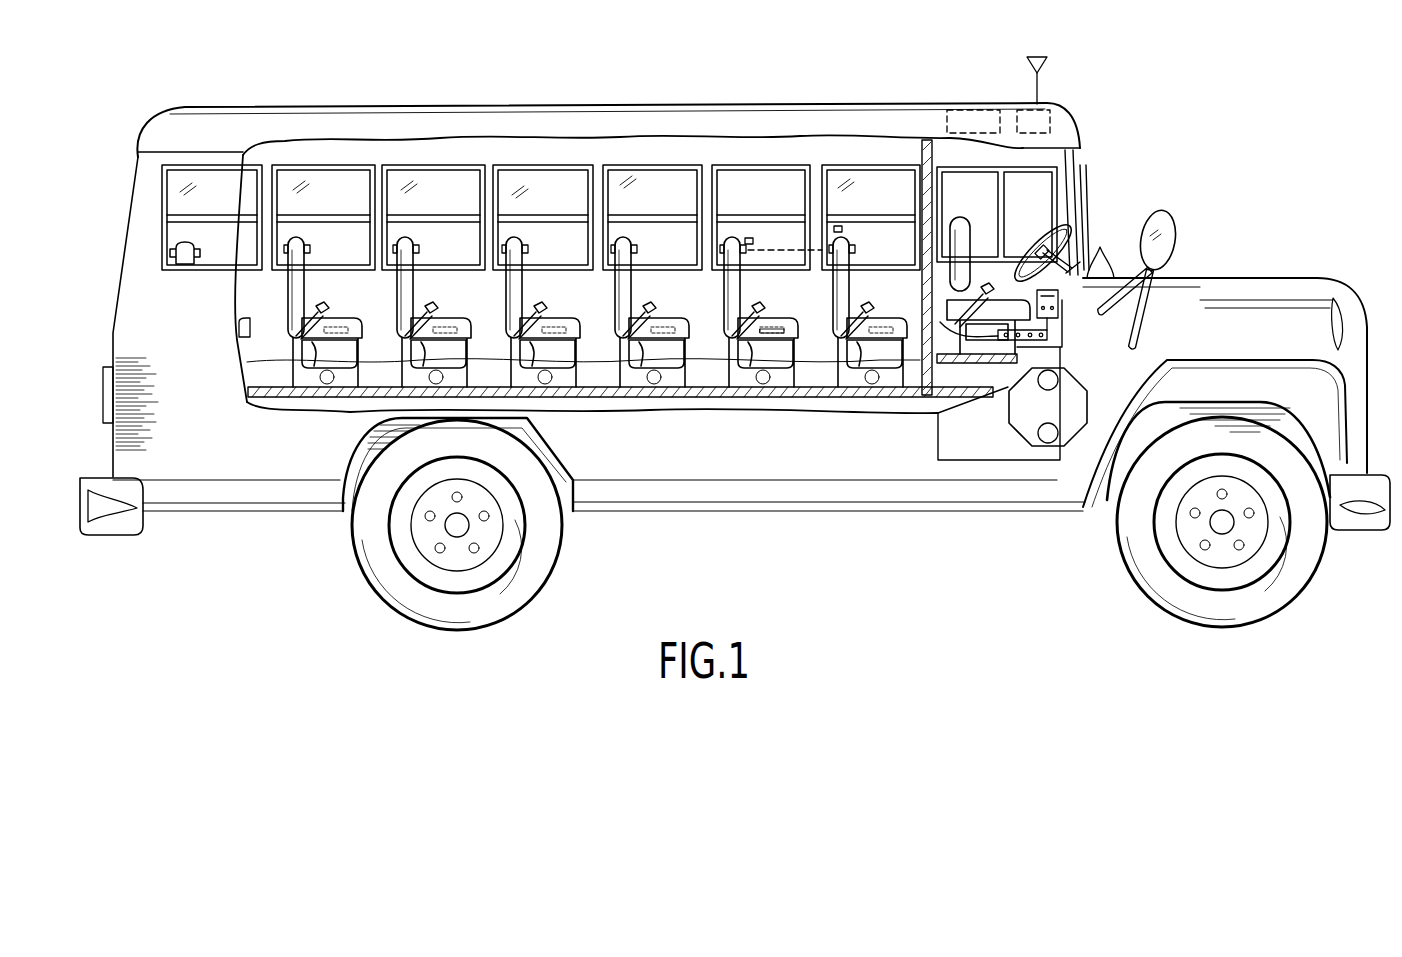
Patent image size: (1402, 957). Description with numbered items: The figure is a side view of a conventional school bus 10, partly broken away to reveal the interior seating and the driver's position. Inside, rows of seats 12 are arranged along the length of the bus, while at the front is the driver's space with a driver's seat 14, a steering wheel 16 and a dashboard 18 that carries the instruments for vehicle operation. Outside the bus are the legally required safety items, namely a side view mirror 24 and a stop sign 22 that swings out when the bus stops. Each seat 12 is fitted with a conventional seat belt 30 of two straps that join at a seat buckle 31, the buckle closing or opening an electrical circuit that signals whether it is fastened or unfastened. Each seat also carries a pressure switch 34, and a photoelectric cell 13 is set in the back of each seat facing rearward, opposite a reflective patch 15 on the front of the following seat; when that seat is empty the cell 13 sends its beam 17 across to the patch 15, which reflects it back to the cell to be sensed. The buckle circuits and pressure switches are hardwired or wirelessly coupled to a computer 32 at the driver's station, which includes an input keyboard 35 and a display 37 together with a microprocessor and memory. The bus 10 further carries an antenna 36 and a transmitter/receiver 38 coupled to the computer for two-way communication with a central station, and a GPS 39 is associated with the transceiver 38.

The school bus 10 is at (450, 80).
The seat 12 is at (302, 288).
The photoelectric cell 13 is at (836, 226).
The driver's seat 14 is at (953, 212).
The reflective patch 15 is at (749, 237).
The steering wheel 16 is at (1040, 242).
The beam 17 is at (780, 247).
The dashboard 18 is at (1100, 246).
The stop sign 22 is at (1012, 442).
The side view mirror 24 is at (1177, 222).
The seat belt 30 is at (300, 322).
The seat buckle 31 is at (326, 304).
The computer 32 is at (1050, 336).
The pressure switch 34 is at (771, 321).
The input keyboard 35 is at (1054, 309).
The antenna 36 is at (1041, 86).
The display 37 is at (1027, 275).
The transmitter/receiver 38 is at (1046, 114).
The GPS 39 is at (951, 110).